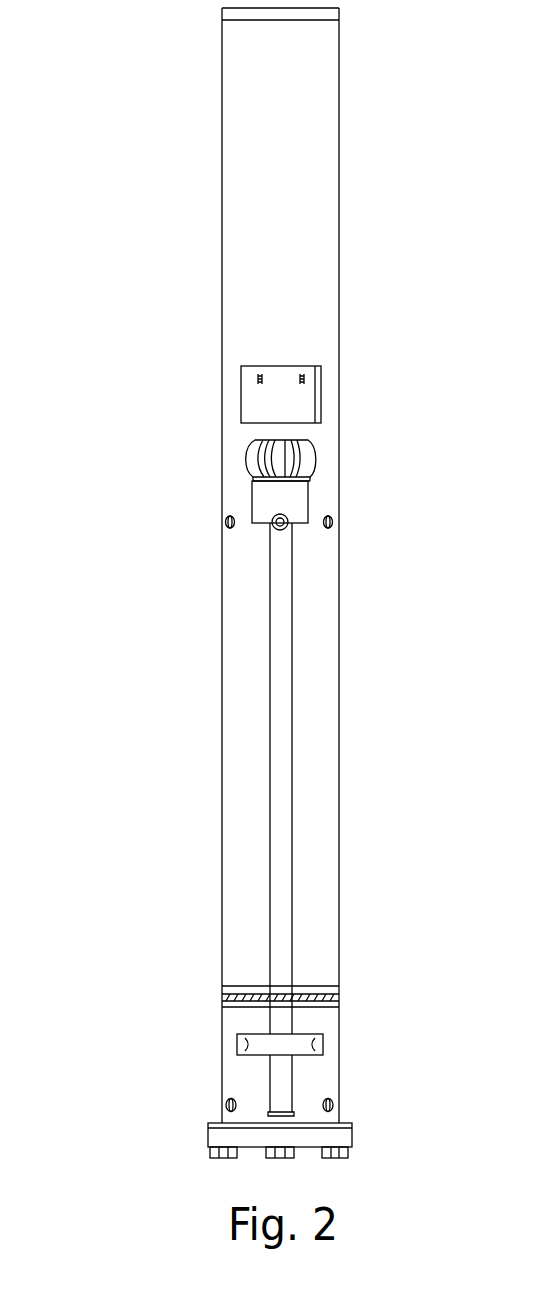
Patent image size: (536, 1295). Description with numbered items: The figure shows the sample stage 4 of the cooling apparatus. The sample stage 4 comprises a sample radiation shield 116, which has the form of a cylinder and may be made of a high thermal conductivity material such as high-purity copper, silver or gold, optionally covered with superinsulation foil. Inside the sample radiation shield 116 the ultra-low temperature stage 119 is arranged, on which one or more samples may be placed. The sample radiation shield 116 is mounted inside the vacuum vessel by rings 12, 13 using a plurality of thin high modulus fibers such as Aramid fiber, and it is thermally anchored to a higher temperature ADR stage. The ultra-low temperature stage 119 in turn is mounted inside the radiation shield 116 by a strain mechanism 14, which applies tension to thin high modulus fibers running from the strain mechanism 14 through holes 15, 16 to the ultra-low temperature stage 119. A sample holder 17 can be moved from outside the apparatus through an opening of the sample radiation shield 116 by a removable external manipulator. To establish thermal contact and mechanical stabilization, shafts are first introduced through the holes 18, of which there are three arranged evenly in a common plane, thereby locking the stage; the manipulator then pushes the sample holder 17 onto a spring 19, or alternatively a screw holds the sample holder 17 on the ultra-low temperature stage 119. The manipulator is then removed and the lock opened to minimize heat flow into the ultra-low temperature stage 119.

The sample stage 4 is at (140, 278).
The ring 12 is at (316, 17).
The ring 13 is at (302, 995).
The strain mechanism 14 is at (312, 1149).
The hole 15 is at (340, 1103).
The hole 16 is at (334, 521).
The sample holder 17 is at (321, 389).
The holes 18 is at (324, 1042).
The spring 19 is at (318, 459).
The sample radiation shield 116 is at (318, 140).
The ultra-low temperature stage 119 is at (292, 653).